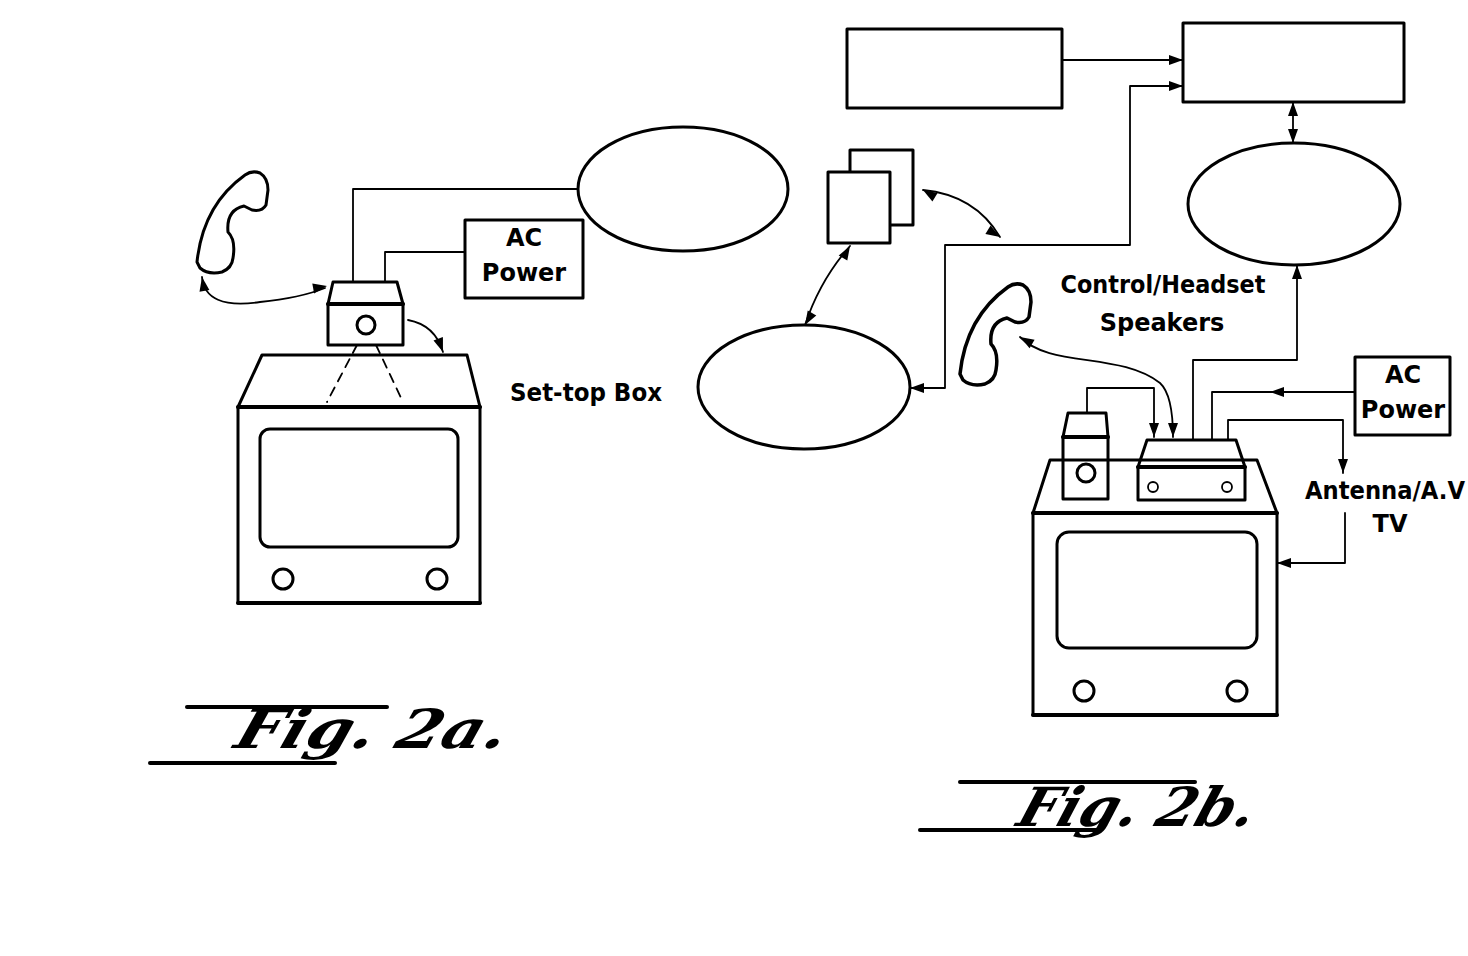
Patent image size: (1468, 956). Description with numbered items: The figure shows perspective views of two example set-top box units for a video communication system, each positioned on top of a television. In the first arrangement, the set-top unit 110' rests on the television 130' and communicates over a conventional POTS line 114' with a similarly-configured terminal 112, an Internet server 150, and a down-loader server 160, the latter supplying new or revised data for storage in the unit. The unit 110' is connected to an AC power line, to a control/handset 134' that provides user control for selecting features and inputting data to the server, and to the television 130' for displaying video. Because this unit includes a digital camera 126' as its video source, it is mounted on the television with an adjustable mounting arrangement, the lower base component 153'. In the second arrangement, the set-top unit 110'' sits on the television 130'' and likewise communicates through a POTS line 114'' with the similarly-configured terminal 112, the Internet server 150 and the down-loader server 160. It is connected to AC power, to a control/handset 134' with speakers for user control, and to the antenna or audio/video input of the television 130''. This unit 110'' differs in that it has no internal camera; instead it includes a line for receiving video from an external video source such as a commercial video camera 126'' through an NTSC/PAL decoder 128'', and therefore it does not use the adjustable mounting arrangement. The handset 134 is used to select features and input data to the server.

In FIG. 2a, the control/handset 134' is at (245, 198).
In FIG. 2a, the POTS line 114' is at (683, 170).
In FIG. 2a, the digital camera 126' is at (269, 337).
In FIG. 2a, the set-top unit 110' is at (370, 273).
In FIG. 2a, the lower base component 153' is at (274, 380).
In FIG. 2a, the television 130' is at (398, 503).
In FIG. 2b, the down-loader server 160 is at (847, 34).
In FIG. 2b, the second terminal 112 is at (844, 178).
In FIG. 2b, the Internet server 150 is at (1386, 103).
In FIG. 2b, the POTS line 114'' is at (1075, 313).
In FIG. 2b, the control/handset 134 is at (982, 361).
In FIG. 2b, the camera 126'' is at (1003, 461).
In FIG. 2b, the NTSC/PAL decoder 128'' is at (1003, 461).
In FIG. 2b, the set-top unit 110'' is at (1220, 382).
In FIG. 2b, the television 130'' is at (1202, 607).